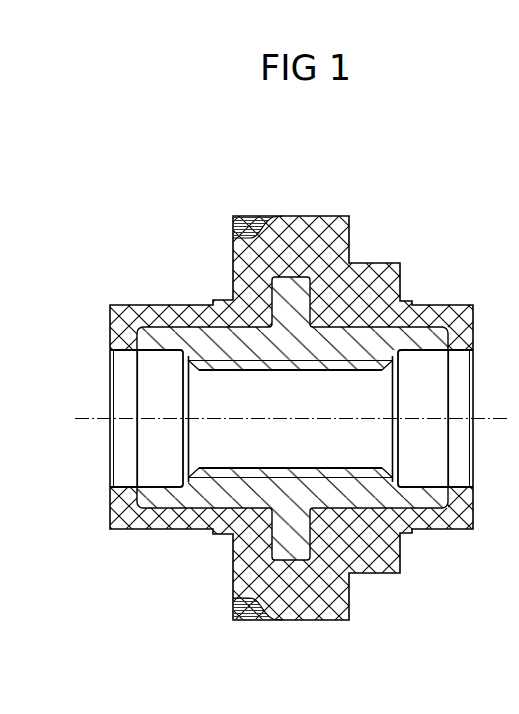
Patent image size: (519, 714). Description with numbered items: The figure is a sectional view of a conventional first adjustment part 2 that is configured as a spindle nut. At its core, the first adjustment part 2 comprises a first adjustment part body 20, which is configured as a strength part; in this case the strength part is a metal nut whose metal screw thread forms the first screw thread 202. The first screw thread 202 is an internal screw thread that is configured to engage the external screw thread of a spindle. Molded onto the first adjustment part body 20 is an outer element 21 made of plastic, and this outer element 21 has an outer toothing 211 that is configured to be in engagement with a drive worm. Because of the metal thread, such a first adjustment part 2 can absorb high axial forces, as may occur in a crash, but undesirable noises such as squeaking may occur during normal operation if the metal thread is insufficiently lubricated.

The first adjustment part 2 is at (438, 172).
The first adjustment part body 20 is at (427, 333).
The outer element 21 is at (395, 310).
The outer toothing 211 is at (328, 227).
The first screw thread 202 is at (351, 367).